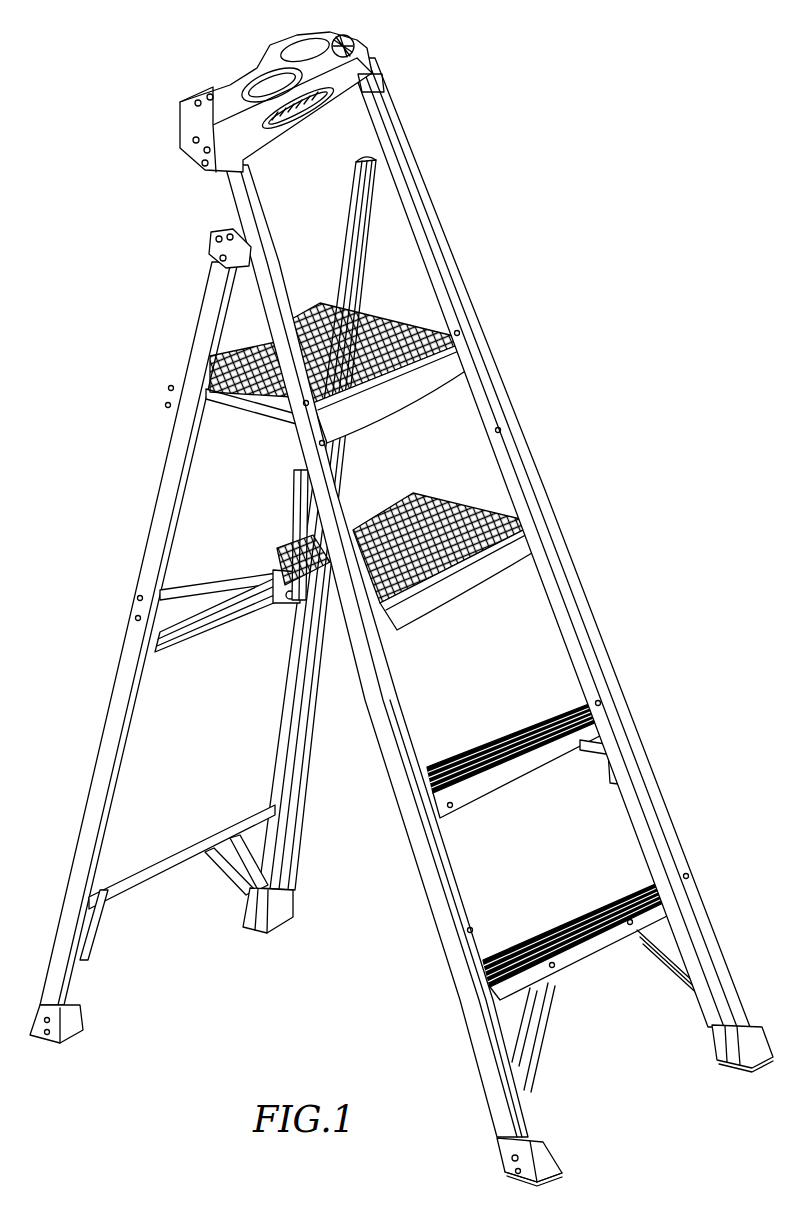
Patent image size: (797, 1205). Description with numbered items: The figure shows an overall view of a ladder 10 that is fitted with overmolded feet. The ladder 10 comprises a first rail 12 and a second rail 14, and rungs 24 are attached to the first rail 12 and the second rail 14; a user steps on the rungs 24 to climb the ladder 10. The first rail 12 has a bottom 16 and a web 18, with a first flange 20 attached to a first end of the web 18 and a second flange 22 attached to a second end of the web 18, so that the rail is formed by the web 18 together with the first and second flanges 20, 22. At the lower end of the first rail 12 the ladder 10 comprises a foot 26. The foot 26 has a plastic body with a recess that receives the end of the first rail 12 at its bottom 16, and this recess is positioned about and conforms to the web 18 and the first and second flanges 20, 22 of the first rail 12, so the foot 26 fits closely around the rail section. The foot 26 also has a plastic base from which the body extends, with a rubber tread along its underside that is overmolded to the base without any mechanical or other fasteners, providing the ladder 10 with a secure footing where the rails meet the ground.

The ladder 10 is at (401, 609).
The first rail 12 is at (549, 542).
The second rail 14 is at (380, 728).
The bottom 16 is at (635, 1089).
The web 18 is at (645, 787).
The first flange 20 is at (673, 835).
The second flange 22 is at (622, 781).
The rungs 24 is at (517, 718).
The foot 26 is at (712, 1080).